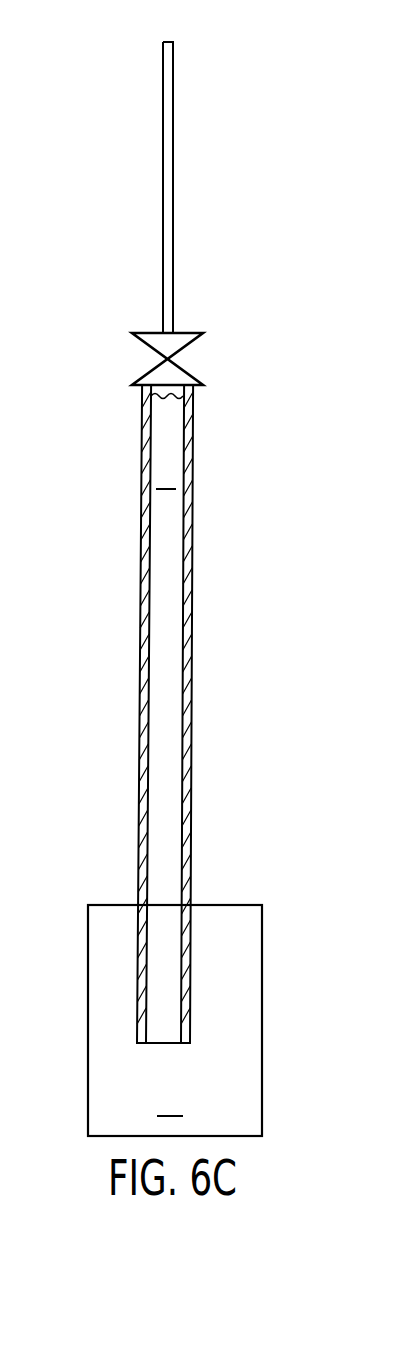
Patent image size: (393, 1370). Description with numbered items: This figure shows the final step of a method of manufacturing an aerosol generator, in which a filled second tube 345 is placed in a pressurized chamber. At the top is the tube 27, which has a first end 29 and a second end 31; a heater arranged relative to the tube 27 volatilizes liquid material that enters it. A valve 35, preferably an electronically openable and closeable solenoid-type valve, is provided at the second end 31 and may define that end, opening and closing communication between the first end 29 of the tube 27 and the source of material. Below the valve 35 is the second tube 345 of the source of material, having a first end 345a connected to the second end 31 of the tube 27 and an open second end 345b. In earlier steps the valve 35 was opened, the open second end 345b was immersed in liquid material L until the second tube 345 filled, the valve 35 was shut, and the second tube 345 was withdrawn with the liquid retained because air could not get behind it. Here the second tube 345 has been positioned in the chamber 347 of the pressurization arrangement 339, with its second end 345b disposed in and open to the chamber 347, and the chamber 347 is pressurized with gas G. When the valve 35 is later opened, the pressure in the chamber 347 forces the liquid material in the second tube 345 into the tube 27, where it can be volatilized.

The tube 27 is at (178, 182).
The first end of the tube 29 is at (173, 43).
The second end of the tube 31 is at (173, 330).
The valve 35 is at (190, 345).
The second tube 345 is at (202, 599).
The first end of the second tube 345a is at (169, 383).
The second end of the second tube 345b is at (165, 1043).
The pressurization arrangement 339 is at (270, 1053).
The chamber 347 is at (248, 1097).